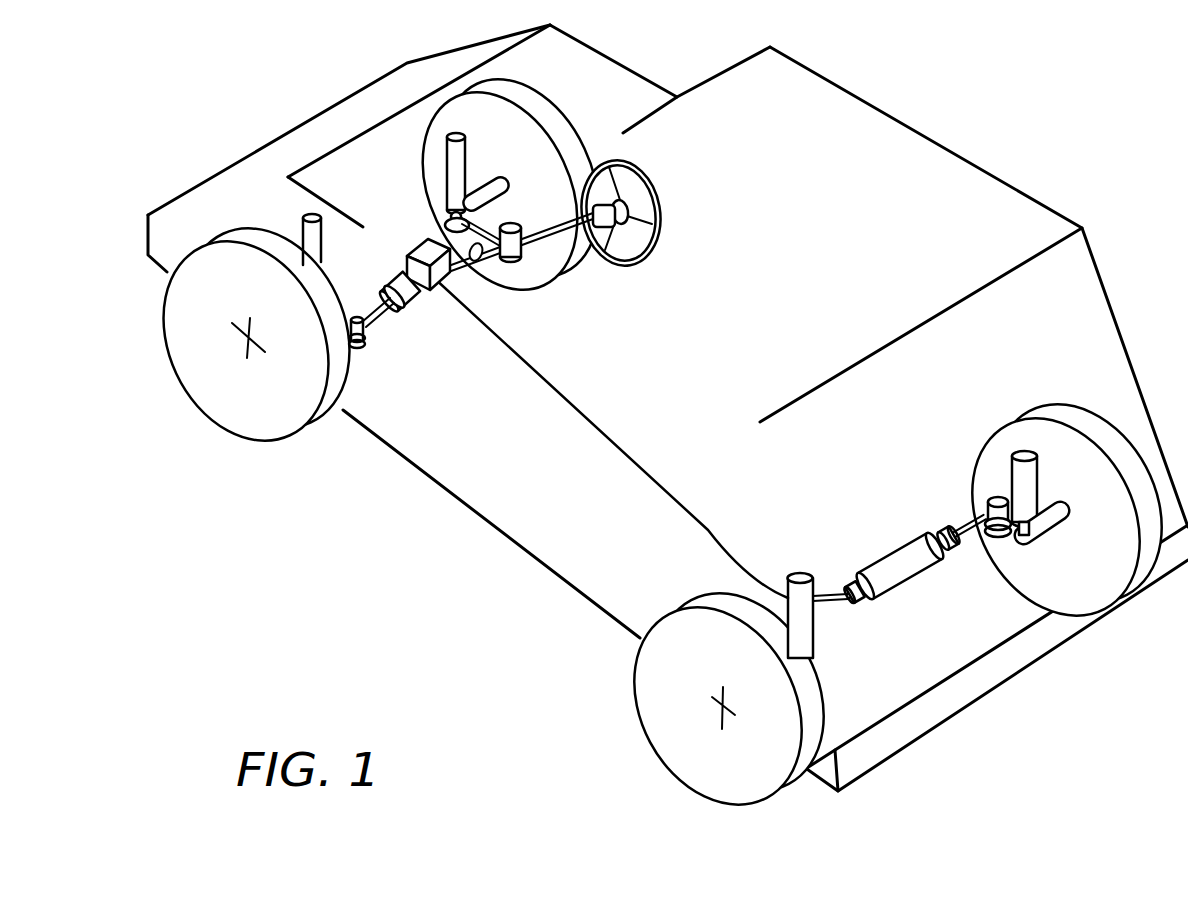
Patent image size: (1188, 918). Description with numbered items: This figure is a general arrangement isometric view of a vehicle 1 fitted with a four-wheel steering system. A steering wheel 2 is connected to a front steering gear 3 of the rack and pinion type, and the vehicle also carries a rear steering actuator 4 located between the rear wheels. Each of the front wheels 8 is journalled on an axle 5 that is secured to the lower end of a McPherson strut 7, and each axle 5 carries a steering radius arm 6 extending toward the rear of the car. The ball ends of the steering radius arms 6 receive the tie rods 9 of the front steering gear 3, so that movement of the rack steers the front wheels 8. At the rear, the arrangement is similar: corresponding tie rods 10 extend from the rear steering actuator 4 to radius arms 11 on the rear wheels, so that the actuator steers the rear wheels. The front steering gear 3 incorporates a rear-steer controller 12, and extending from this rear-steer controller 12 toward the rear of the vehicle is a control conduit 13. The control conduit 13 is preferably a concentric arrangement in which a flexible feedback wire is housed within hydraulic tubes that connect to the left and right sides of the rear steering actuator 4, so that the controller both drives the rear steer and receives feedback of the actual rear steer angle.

The vehicle 1 is at (943, 145).
The steering wheel 2 is at (660, 198).
The front steering gear 3 is at (432, 320).
The rear steering actuator 4 is at (876, 553).
The axle 5 is at (487, 193).
The steering radius arm 6 is at (440, 230).
The McPherson strut 7 is at (308, 238).
The front wheel 8 is at (210, 375).
The tie rod 9 is at (345, 410).
The tie rod 10 is at (949, 507).
The radius arm 11 is at (1000, 580).
The rear-steer controller 12 is at (415, 245).
The control conduit 13 is at (598, 437).